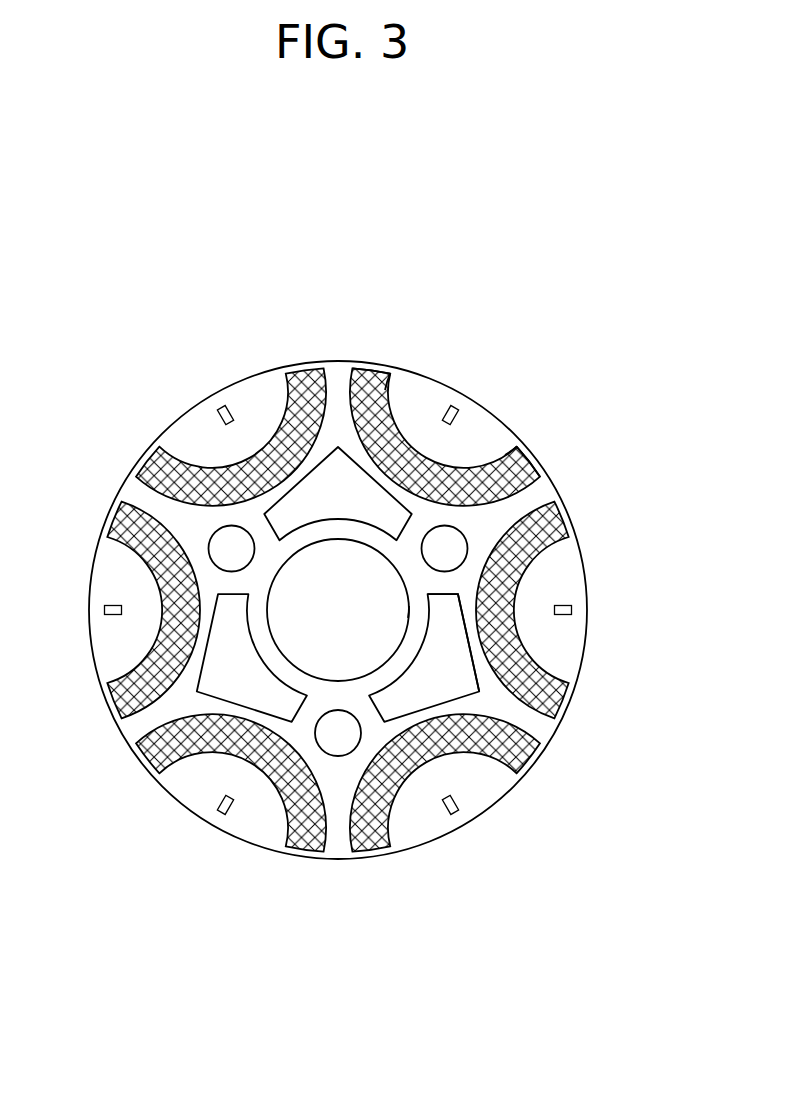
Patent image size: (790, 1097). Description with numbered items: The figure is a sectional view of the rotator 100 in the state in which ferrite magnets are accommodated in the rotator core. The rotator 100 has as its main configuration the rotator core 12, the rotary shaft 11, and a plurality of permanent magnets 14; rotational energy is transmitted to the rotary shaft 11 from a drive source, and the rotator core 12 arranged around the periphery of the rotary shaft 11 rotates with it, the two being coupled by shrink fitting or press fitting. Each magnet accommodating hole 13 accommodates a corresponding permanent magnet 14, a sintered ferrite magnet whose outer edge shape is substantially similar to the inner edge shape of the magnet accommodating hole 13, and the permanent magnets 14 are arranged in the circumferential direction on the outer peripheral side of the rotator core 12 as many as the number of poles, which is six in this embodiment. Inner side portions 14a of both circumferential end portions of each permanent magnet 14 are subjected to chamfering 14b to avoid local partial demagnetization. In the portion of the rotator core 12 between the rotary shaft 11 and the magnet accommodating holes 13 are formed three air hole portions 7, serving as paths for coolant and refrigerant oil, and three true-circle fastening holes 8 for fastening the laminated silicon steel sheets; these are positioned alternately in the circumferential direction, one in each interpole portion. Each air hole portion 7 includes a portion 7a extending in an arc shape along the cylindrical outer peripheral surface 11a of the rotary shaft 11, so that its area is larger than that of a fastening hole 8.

The rotator 100 is at (83, 309).
The air hole portion 7 is at (317, 500).
The portion extending in an arc shape 7a is at (400, 690).
The fastening hole 8 is at (450, 553).
The rotary shaft 11 is at (332, 628).
The cylindrical outer peripheral surface 11a is at (407, 617).
The rotator core 12 is at (480, 790).
The magnet accommodating hole 13 is at (453, 468).
The permanent magnet 14 is at (382, 412).
The inner side portion 14a is at (355, 368).
The chamfering 14b is at (388, 378).